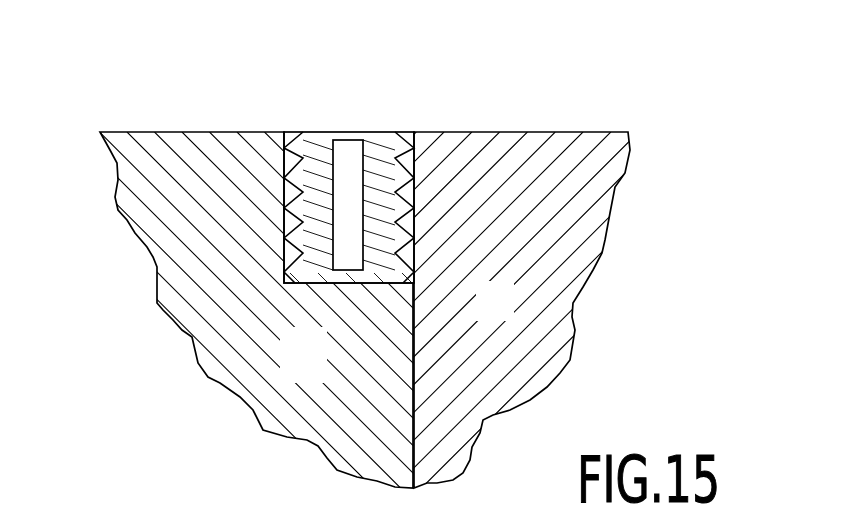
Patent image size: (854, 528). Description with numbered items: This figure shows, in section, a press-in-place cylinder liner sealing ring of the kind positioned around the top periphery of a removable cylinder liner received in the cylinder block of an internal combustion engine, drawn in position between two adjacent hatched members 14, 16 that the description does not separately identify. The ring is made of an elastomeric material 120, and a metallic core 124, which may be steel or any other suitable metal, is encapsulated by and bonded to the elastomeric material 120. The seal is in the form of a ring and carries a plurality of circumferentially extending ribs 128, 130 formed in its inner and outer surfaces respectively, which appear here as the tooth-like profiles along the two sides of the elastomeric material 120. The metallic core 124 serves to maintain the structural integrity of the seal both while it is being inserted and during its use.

The first housing part 14 is at (510, 318).
The second housing part 16 is at (320, 373).
The elastomeric material 120 is at (331, 155).
The metallic core 124 is at (390, 150).
The circumferentially extending rib 128 is at (180, 208).
The circumferentially extending rib 130 is at (547, 207).